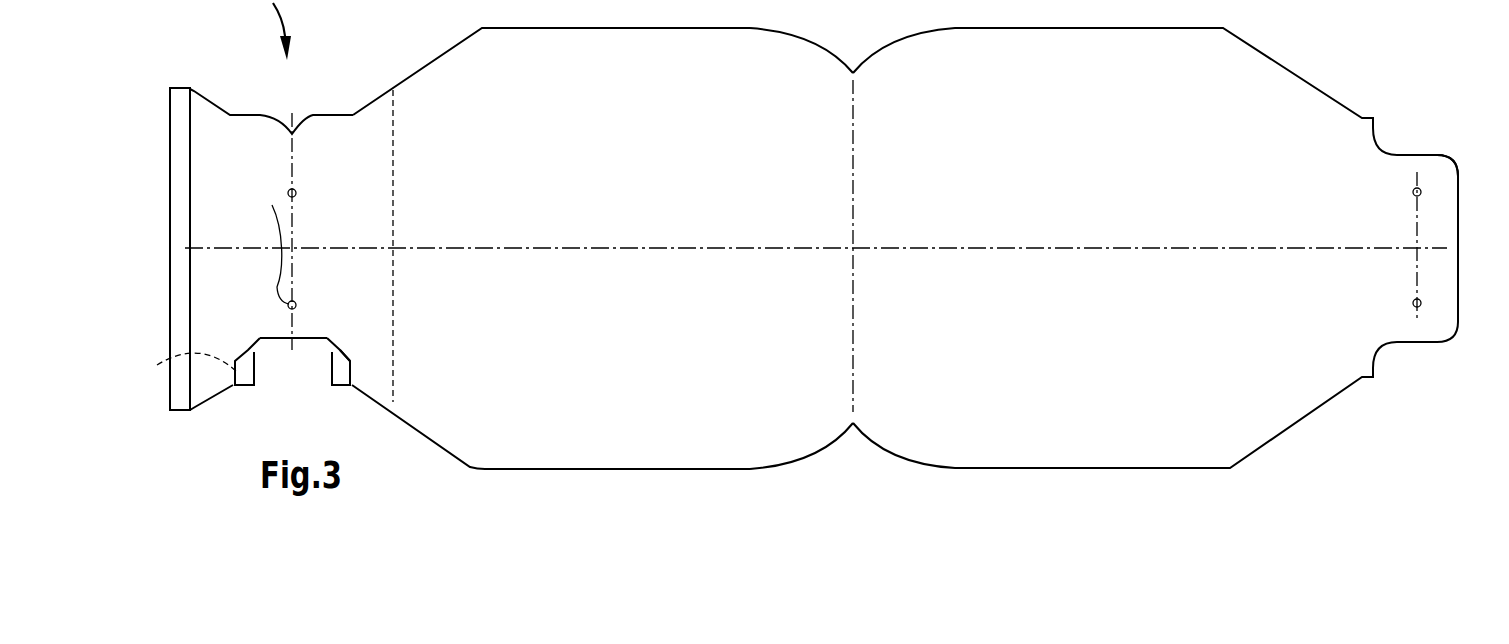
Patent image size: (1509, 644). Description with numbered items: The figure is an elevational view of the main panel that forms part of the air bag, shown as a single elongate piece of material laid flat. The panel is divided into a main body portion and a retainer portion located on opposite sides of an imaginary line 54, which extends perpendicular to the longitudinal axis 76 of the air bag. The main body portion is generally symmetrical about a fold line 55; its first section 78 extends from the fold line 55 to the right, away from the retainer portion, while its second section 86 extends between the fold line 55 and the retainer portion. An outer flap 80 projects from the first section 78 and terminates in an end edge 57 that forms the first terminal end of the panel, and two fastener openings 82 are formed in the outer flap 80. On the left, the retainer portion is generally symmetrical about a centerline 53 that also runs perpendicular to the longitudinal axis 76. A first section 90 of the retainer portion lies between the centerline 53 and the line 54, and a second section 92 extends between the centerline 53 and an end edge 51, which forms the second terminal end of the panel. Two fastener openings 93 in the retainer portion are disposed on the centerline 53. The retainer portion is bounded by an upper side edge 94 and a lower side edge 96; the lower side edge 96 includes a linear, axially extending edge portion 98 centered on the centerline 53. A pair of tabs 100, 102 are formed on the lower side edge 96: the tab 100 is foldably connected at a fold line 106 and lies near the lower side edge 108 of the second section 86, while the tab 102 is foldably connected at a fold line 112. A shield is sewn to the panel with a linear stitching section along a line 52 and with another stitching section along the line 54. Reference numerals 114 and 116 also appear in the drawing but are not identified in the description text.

The end edge 51 is at (170, 197).
The line 52 is at (192, 175).
The centerline 53 is at (293, 167).
The imaginary line 54 is at (393, 157).
The fold line 55 is at (853, 213).
The end edge 57 is at (1458, 287).
The longitudinal axis 76 is at (553, 248).
The first section 78 is at (966, 157).
The outer flap 80 is at (1405, 167).
The fastener openings 82 is at (1414, 301).
The second section 86 is at (626, 157).
The first section 90 is at (367, 223).
The second section 92 is at (213, 323).
The fastener openings 93 is at (288, 196).
The upper side edge 94 is at (180, 89).
The lower side edge 96 is at (352, 318).
The edge portion 98 is at (275, 338).
The tab 100 is at (343, 372).
The tab 102 is at (250, 373).
The fold line 106 is at (353, 372).
The lower side edge 108 is at (467, 460).
The fold line 112 is at (183, 374).
The neck slope 114 is at (212, 397).
The flange bottom edge 116 is at (182, 410).